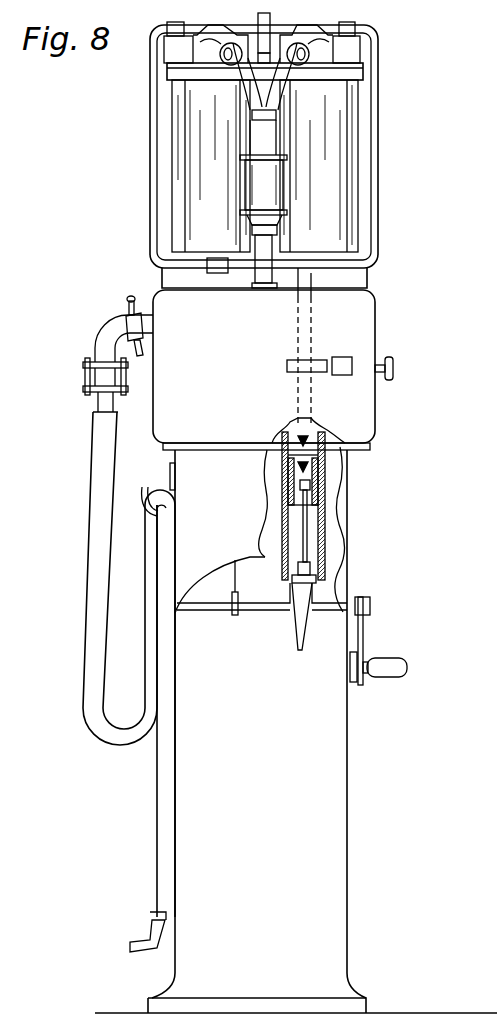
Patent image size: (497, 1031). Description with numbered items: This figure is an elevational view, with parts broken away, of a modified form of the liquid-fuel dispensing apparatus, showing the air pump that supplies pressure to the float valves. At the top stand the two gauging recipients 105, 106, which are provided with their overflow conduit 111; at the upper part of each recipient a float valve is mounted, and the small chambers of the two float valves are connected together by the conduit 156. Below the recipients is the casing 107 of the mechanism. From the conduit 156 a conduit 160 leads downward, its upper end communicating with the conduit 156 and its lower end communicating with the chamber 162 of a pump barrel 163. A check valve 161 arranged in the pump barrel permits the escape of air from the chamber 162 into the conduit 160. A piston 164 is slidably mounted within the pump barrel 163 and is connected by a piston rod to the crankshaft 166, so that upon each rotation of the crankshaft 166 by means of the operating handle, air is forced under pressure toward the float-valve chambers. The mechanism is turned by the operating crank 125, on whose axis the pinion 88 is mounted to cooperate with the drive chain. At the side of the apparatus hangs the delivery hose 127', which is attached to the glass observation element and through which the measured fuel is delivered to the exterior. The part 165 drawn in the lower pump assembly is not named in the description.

The pinion 88 is at (233, 617).
The gauging recipient 105 is at (322, 137).
The gauging recipient 106 is at (205, 109).
The casing of the mechanism 107 is at (273, 370).
The overflow conduit 111 is at (280, 60).
The operating crank 125 is at (360, 628).
The delivery hose 127' is at (104, 682).
The conduit 156 is at (373, 183).
The conduit 160 is at (300, 280).
The check valve 161 is at (315, 430).
The chamber 162 is at (307, 450).
The pump barrel 163 is at (323, 557).
The piston 164 is at (315, 487).
The piston rod 165 is at (300, 543).
The crankshaft 166 is at (302, 612).